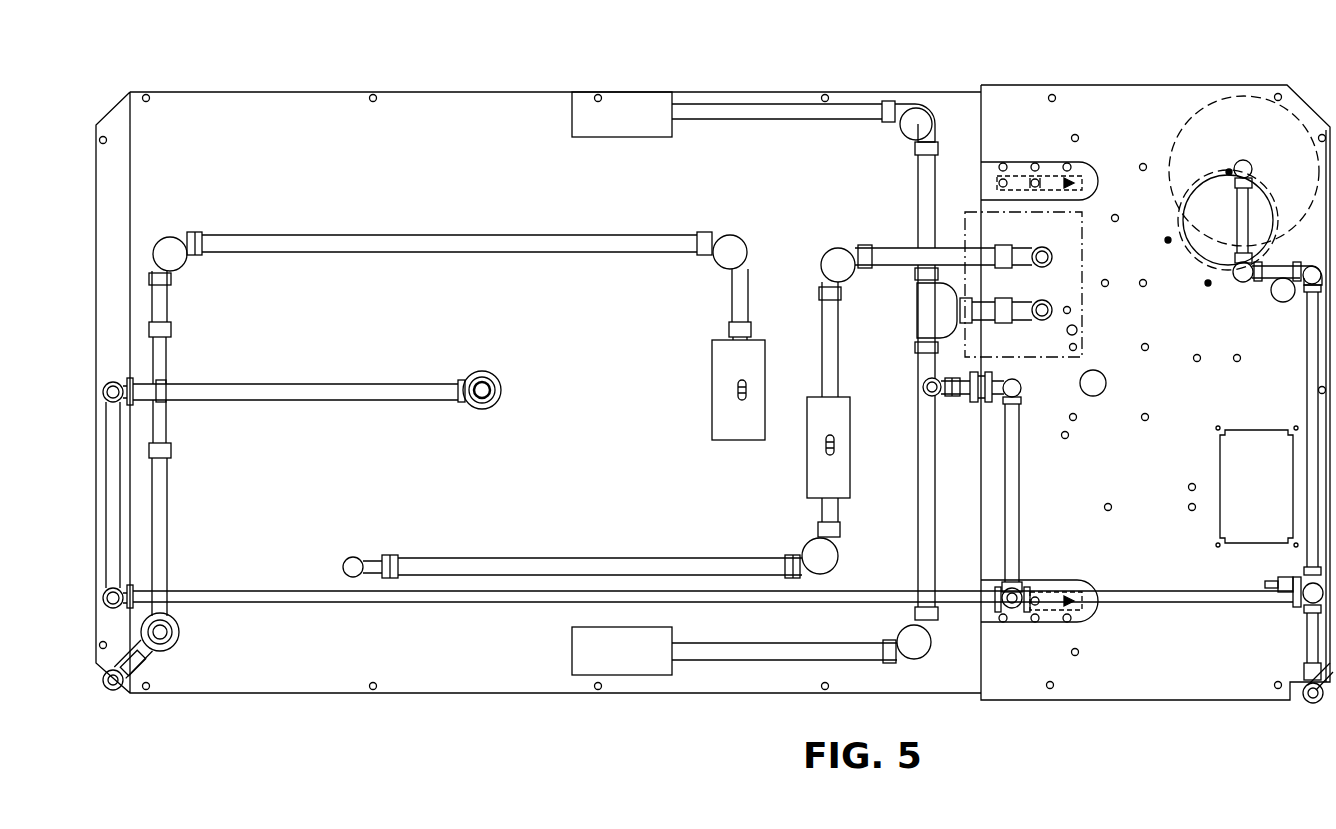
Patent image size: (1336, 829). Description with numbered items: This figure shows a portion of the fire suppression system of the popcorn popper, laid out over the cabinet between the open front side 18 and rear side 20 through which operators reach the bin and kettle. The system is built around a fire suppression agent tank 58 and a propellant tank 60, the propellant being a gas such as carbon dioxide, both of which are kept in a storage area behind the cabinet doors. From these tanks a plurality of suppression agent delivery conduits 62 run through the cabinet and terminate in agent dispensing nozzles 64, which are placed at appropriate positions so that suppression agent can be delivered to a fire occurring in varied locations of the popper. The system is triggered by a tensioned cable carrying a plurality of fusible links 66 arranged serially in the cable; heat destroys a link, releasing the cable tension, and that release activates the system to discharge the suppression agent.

The front side 18 is at (633, 706).
The rear side 20 is at (840, 54).
The fire suppression agent tank 58 is at (1172, 152).
The propellant tank 60 is at (1082, 257).
The suppression agent delivery conduits 62 is at (480, 235).
The agent dispensing nozzles 64 is at (483, 377).
The fusible links 66 is at (712, 383).